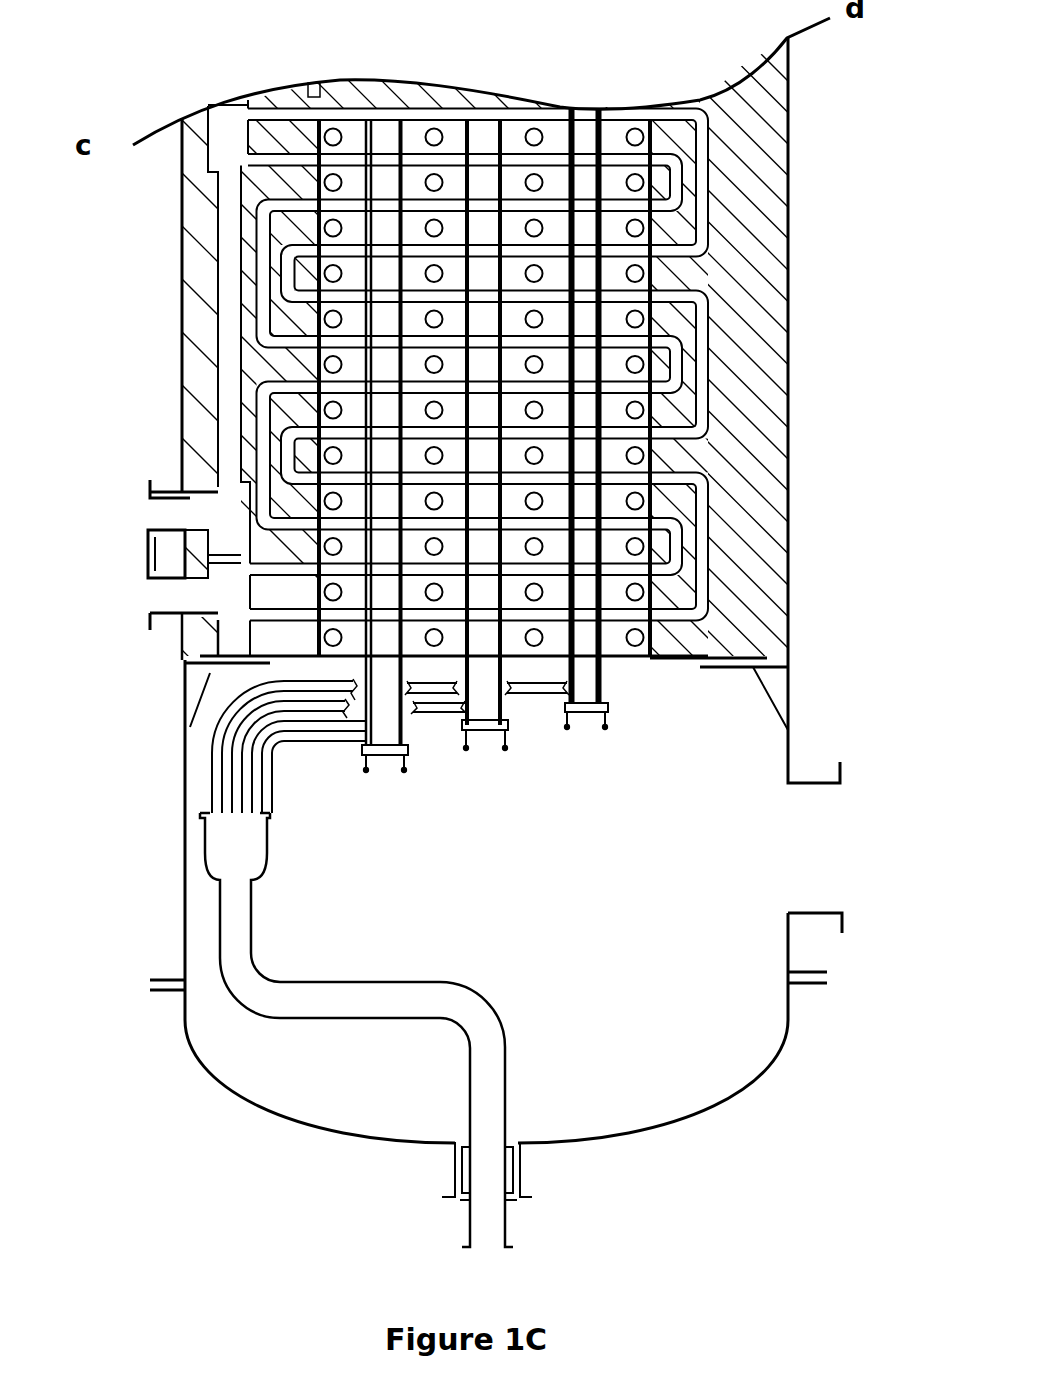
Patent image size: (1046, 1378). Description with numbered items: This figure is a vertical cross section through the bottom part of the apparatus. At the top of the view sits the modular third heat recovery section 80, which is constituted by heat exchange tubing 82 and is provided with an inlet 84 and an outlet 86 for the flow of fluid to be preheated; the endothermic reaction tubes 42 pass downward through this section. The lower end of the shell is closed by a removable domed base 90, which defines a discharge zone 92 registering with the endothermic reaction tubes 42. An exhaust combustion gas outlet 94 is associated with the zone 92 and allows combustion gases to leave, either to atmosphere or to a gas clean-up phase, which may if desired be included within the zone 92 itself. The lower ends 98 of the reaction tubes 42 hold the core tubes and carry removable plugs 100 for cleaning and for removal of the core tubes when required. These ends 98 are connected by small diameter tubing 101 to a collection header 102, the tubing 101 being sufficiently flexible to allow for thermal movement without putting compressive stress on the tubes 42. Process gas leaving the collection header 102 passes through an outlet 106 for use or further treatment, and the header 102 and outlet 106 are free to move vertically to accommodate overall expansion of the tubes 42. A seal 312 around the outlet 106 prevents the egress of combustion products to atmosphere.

The endothermic reaction tubes 42 is at (607, 640).
The third heat recovery section 80 is at (717, 192).
The heat exchange tubing 82 is at (707, 335).
The inlet 84 is at (150, 617).
The outlet 86 is at (150, 492).
The domed base 90 is at (250, 1097).
The discharge zone 92 is at (510, 922).
The exhaust combustion gas outlet 94 is at (818, 876).
The lower ends of the endothermic reaction tubes 98 is at (463, 730).
The removable plugs 100 is at (380, 760).
The small diameter tubing 101 is at (227, 793).
The collection header 102 is at (200, 847).
The outlet 106 is at (505, 1220).
The seal 312 is at (455, 1170).